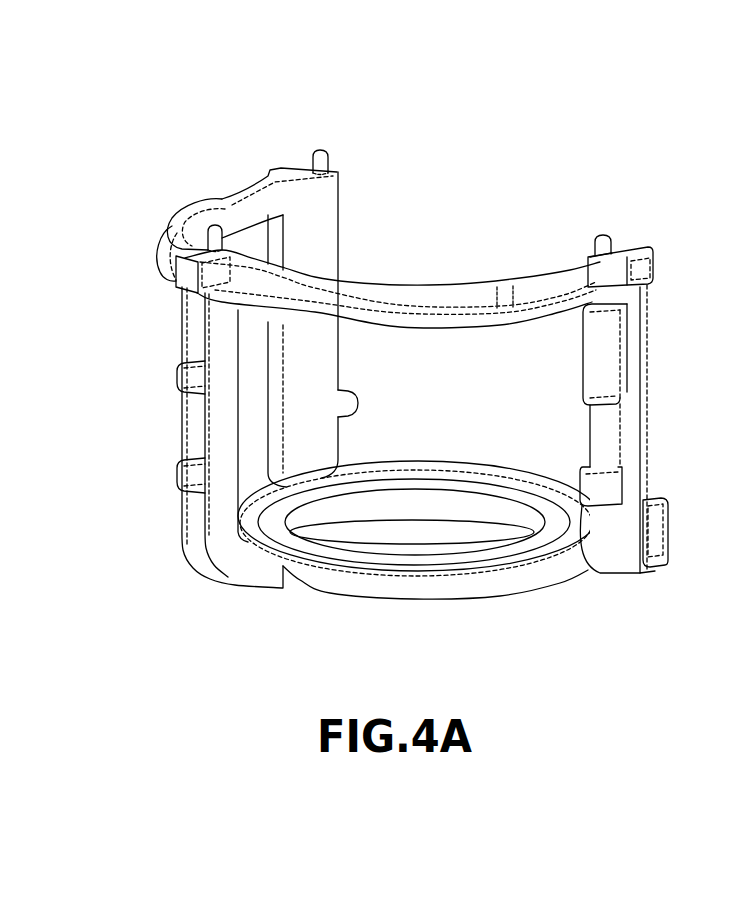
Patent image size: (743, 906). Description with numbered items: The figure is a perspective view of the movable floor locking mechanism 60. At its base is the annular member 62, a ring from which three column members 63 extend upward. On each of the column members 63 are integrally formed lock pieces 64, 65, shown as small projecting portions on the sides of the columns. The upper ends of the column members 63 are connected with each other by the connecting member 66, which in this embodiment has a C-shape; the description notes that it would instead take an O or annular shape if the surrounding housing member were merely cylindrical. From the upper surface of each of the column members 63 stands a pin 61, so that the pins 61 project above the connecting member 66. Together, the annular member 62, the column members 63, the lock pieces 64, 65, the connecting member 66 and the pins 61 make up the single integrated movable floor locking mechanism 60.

The movable floor locking mechanism 60 is at (505, 157).
The pin 61 is at (320, 150).
The annular member 62 is at (405, 598).
The column member 63 is at (340, 246).
The lock piece 64 is at (177, 374).
The lock piece 65 is at (177, 478).
The connecting member 66 is at (450, 283).